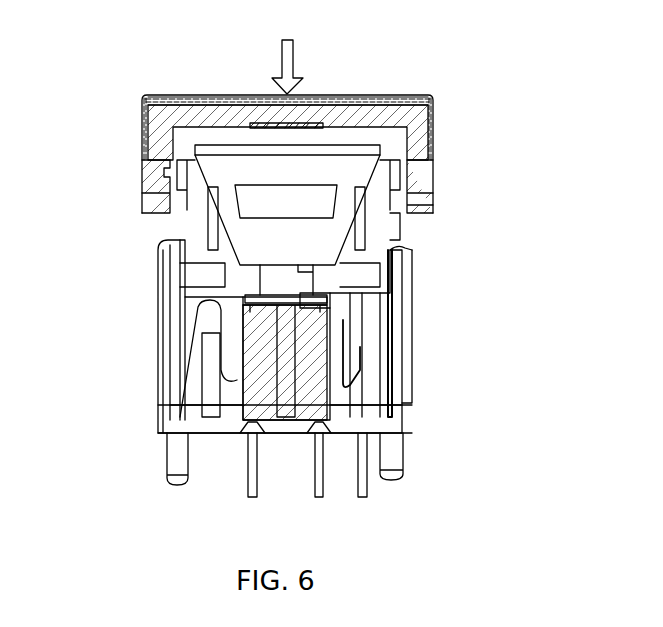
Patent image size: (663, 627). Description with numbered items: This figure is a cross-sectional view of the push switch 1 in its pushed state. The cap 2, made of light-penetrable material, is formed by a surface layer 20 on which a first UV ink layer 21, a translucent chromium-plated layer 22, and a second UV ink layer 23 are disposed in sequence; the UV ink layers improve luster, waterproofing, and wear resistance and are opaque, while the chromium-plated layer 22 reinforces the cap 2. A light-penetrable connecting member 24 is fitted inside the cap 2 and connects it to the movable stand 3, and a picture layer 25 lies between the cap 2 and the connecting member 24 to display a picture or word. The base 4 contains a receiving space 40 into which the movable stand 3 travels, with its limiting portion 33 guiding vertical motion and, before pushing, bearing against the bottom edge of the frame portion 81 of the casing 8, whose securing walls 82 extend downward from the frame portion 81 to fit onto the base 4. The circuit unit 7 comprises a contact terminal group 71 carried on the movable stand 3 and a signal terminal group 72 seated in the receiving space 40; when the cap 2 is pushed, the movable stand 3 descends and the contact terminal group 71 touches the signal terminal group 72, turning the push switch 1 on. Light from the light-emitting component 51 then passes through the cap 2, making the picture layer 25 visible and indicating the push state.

The push switch 1 is at (470, 71).
The cap 2 is at (68, 78).
The surface layer 20 is at (148, 157).
The first UV ink layer 21 is at (146, 132).
The translucent chromium-plated layer 22 is at (147, 109).
The second UV ink layer 23 is at (163, 95).
The connecting member 24 is at (153, 205).
The picture layer 25 is at (315, 125).
The movable stand 3 is at (380, 203).
The base 4 is at (397, 314).
The circuit unit 7 is at (495, 350).
The contact terminal group 71 is at (343, 383).
The signal terminal group 72 is at (367, 363).
The casing 8 is at (495, 205).
The frame portion 81 is at (392, 230).
The securing walls 82 is at (407, 258).
The limiting portion 33 is at (390, 293).
The receiving space 40 is at (197, 298).
The light-emitting component 51 is at (275, 283).